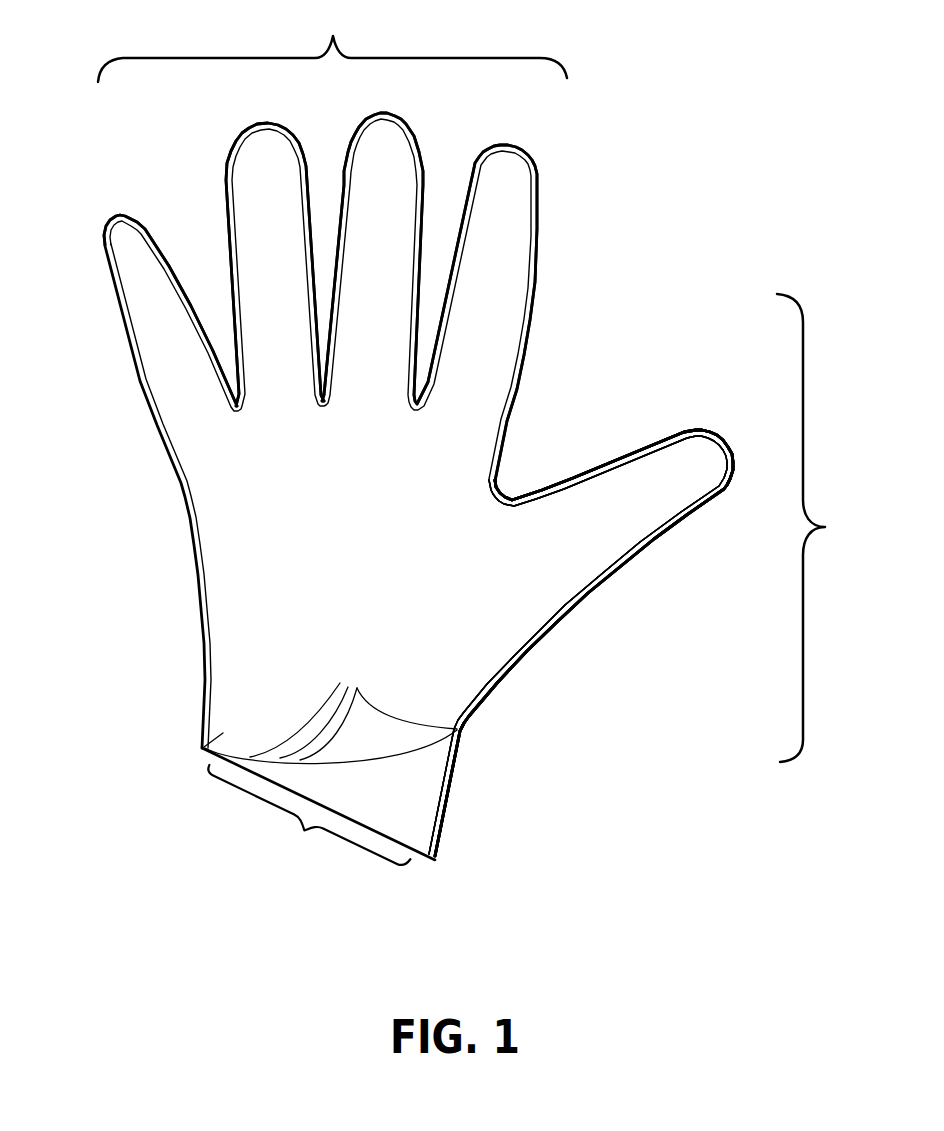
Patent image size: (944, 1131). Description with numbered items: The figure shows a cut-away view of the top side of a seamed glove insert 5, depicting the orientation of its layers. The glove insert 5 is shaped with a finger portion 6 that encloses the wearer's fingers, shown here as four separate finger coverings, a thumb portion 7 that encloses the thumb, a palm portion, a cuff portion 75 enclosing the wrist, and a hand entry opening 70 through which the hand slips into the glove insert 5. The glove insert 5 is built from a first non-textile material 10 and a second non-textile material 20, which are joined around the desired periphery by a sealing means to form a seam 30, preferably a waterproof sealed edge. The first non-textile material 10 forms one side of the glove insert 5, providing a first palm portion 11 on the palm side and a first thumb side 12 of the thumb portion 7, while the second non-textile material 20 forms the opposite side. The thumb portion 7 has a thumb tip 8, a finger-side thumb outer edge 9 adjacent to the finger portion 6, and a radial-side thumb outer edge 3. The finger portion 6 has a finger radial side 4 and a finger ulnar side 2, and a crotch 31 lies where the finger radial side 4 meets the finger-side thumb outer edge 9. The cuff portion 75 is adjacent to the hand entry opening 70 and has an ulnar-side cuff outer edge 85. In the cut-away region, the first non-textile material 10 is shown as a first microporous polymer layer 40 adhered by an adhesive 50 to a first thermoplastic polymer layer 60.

The finger ulnar side 2 is at (267, 245).
The radial-side thumb outer edge 3 is at (643, 558).
The finger radial side 4 is at (530, 282).
The glove insert 5 is at (812, 528).
The finger portion 6 is at (332, 42).
The thumb portion 7 is at (625, 412).
The thumb tip 8 is at (697, 465).
The finger-side thumb outer edge 9 is at (560, 447).
The first non-textile material 10 is at (248, 535).
The first palm portion 11 is at (350, 538).
The first thumb side 12 is at (645, 505).
The second non-textile material 20 is at (405, 797).
The seam 30 is at (542, 630).
The crotch 31 is at (508, 493).
The first microporous polymer layer 40 is at (343, 687).
The adhesive 50 is at (347, 690).
The first thermoplastic polymer layer 60 is at (360, 691).
The hand entry opening 70 is at (306, 820).
The cuff portion 75 is at (237, 695).
The ulnar-side cuff outer edge 85 is at (201, 752).